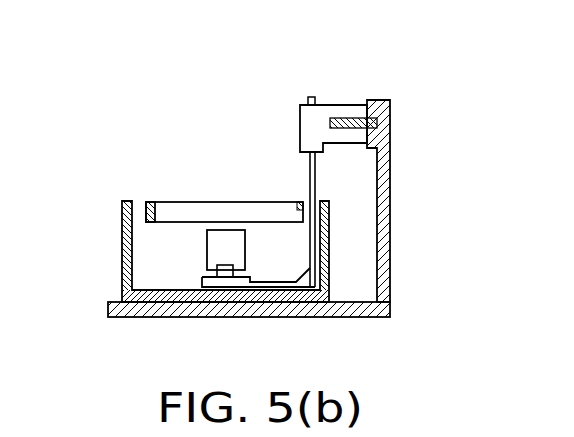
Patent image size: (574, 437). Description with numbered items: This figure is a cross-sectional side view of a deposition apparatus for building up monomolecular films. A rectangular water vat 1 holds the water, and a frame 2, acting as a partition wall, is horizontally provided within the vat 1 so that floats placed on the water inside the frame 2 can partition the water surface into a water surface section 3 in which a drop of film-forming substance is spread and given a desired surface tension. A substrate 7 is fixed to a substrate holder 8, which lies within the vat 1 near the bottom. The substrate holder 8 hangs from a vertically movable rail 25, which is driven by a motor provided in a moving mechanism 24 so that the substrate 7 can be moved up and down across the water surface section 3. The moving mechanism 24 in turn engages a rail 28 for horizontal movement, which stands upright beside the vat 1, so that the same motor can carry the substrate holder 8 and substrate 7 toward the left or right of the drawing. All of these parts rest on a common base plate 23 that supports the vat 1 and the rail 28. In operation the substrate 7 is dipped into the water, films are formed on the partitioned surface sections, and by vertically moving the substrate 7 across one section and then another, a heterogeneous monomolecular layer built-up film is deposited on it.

The water vat 1 is at (122, 258).
The frame 2 is at (150, 202).
The water surface section 3 is at (257, 202).
The substrate 7 is at (222, 243).
The substrate holder 8 is at (200, 282).
The base plate 23 is at (390, 305).
The moving mechanism 24 is at (340, 104).
The vertically movable rail 25 is at (310, 173).
The rail for horizontal movement 28 is at (377, 100).